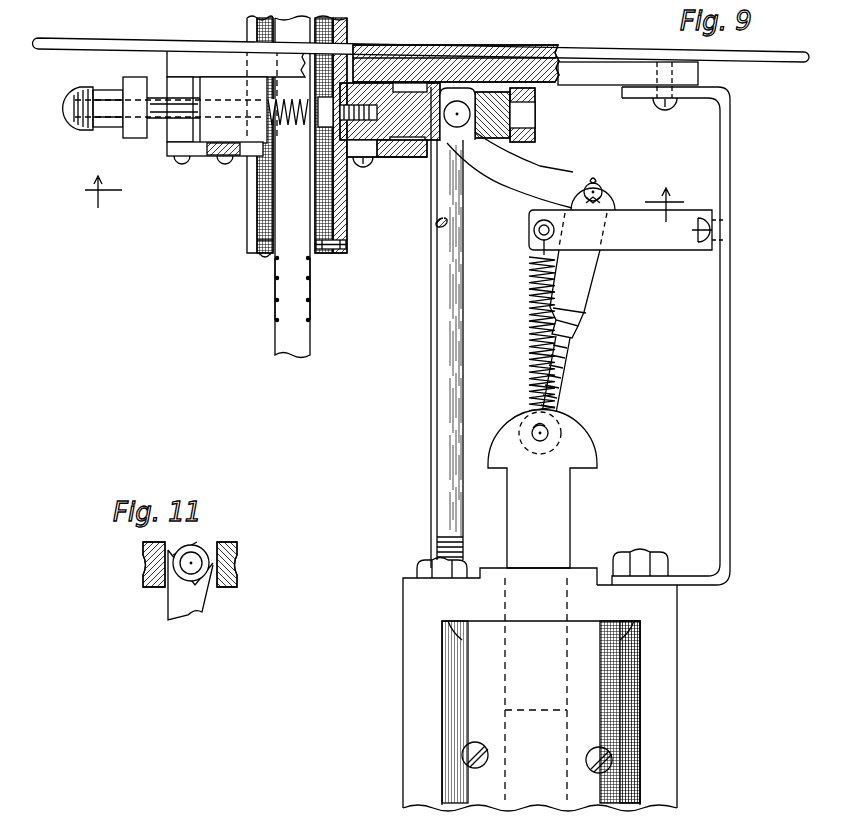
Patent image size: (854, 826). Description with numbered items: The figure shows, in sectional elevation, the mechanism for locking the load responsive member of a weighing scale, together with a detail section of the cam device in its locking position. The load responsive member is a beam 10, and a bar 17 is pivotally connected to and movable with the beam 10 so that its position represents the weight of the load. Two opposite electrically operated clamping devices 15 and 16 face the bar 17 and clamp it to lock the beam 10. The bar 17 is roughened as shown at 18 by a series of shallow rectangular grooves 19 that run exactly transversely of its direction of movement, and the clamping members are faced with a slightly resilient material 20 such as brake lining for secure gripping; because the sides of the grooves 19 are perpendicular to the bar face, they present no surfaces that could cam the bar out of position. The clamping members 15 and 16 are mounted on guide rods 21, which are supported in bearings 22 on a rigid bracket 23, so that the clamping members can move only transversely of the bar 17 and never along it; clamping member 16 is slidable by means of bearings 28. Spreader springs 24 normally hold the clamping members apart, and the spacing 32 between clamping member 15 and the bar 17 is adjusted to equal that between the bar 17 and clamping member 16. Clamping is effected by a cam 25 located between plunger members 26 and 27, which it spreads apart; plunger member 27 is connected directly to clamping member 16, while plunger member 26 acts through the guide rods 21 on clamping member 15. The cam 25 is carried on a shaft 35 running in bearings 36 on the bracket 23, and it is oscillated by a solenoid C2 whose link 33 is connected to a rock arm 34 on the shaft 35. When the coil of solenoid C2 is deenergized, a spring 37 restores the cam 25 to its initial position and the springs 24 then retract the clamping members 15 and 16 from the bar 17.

In FIG. 9, the beam 10 is at (383, 199).
In FIG. 9, the clamping device 15 is at (248, 225).
In FIG. 9, the clamping device 16 is at (345, 222).
In FIG. 9, the bar 17 is at (302, 358).
In FIG. 9, the roughened portion 18 is at (273, 300).
In FIG. 9, the shallow rectangular grooves 19 is at (312, 300).
In FIG. 9, the resilient facing material 20 is at (266, 255).
In FIG. 9, the guide rods 21 is at (163, 122).
In FIG. 9, the bearings 22 is at (197, 172).
In FIG. 9, the bracket 23 is at (556, 48).
In FIG. 9, the spreader springs 24 is at (298, 123).
In FIG. 9, the cam 25 is at (452, 138).
In FIG. 11, the cam 25 is at (183, 575).
In FIG. 9, the plunger member 26 is at (484, 138).
In FIG. 11, the plunger member 26 is at (237, 553).
In FIG. 9, the plunger member 27 is at (414, 147).
In FIG. 11, the plunger member 27 is at (142, 577).
In FIG. 9, the bearings 28 is at (383, 0).
In FIG. 9, the spacing 32 is at (272, 268).
In FIG. 9, the link 33 is at (590, 282).
In FIG. 9, the rock arm 34 is at (548, 168).
In FIG. 9, the shaft 35 is at (468, 142).
In FIG. 11, the shaft 35 is at (205, 575).
In FIG. 9, the bearings 36 is at (438, 0).
In FIG. 9, the spring 37 is at (529, 355).
In FIG. 9, the solenoid C2 is at (627, 670).